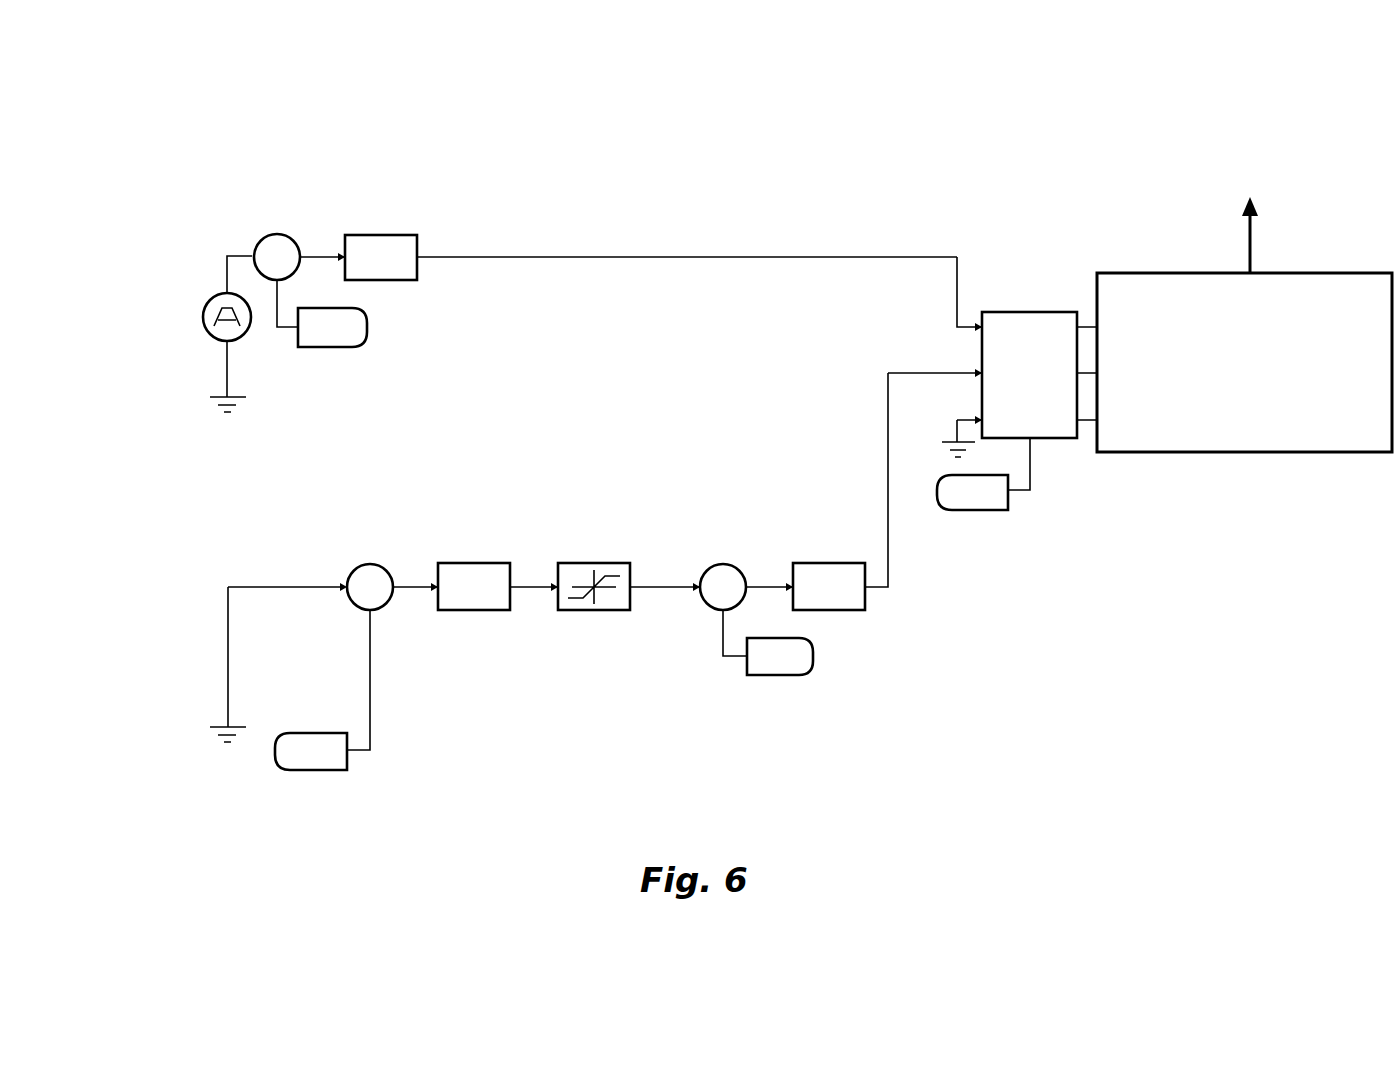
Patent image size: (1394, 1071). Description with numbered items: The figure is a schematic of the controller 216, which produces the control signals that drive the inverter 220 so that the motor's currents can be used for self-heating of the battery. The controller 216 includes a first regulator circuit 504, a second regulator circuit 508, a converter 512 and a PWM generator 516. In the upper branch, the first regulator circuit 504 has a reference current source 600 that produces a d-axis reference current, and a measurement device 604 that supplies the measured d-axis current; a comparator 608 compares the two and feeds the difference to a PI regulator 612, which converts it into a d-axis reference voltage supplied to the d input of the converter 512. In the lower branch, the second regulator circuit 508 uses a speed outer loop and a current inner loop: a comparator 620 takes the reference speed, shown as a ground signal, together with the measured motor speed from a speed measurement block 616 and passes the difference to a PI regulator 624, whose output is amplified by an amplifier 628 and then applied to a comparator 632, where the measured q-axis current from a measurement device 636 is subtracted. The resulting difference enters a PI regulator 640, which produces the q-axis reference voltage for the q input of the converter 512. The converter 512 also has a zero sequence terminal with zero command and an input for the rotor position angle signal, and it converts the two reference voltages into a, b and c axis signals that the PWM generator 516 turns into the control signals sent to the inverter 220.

The controller 216 is at (690, 113).
The first regulator circuit 504 is at (204, 178).
The second regulator circuit 508 is at (194, 511).
The converter 512 is at (1030, 311).
The PWM generator 516 is at (1244, 362).
The inverter 220 is at (1259, 219).
The reference current source 600 is at (206, 304).
The measurement device 604 is at (366, 346).
The comparator 608 is at (288, 231).
The PI regulator 612 is at (377, 234).
The voltage feedback Um 616 is at (348, 762).
The comparator 620 is at (365, 564).
The PI regulator 624 is at (478, 611).
The amplifier 628 is at (607, 562).
The comparator 632 is at (727, 562).
The measurement device 636 is at (812, 661).
The PI regulator 640 is at (838, 562).